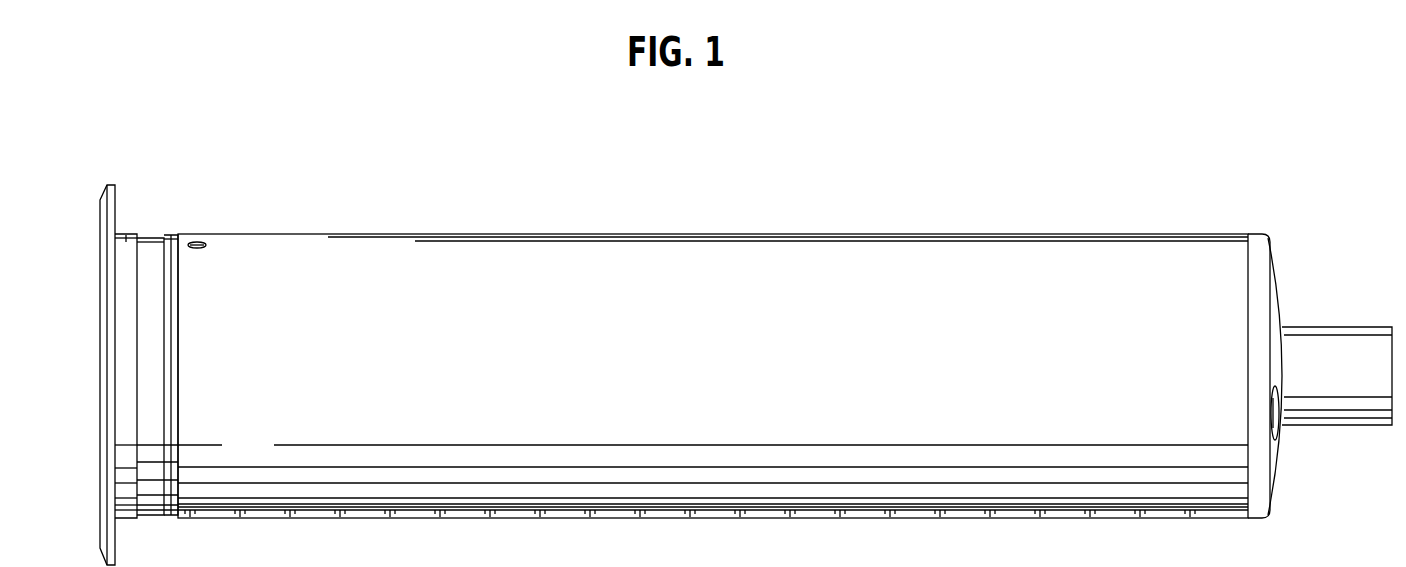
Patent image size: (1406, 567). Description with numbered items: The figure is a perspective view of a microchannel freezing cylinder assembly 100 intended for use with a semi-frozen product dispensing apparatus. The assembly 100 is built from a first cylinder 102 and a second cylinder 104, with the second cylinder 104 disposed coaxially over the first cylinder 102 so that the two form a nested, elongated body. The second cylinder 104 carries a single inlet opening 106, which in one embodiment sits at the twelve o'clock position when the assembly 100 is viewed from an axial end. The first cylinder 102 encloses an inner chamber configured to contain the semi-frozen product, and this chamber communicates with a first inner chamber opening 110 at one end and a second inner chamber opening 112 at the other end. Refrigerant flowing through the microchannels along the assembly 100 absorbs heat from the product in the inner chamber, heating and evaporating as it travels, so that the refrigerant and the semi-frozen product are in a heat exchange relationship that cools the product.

The microchannel freezing cylinder assembly 100 is at (379, 183).
The first cylinder 102 is at (126, 235).
The second cylinder 104 is at (810, 255).
The inlet opening 106 is at (197, 242).
The first inner chamber opening 110 is at (90, 437).
The second inner chamber opening 112 is at (1278, 437).